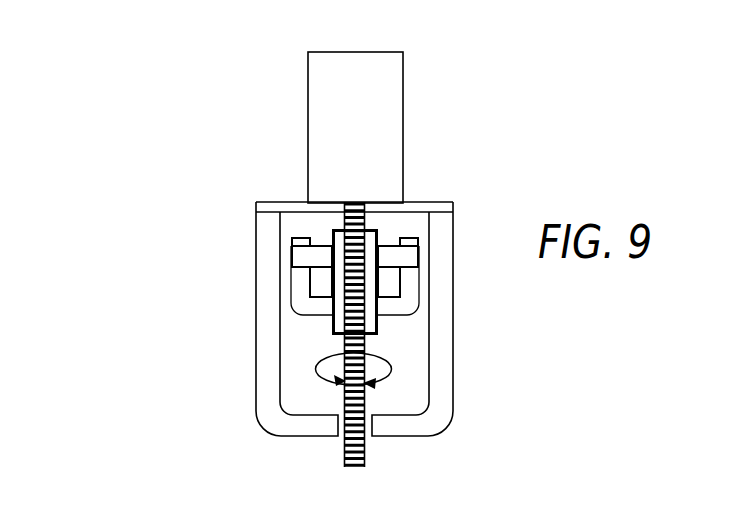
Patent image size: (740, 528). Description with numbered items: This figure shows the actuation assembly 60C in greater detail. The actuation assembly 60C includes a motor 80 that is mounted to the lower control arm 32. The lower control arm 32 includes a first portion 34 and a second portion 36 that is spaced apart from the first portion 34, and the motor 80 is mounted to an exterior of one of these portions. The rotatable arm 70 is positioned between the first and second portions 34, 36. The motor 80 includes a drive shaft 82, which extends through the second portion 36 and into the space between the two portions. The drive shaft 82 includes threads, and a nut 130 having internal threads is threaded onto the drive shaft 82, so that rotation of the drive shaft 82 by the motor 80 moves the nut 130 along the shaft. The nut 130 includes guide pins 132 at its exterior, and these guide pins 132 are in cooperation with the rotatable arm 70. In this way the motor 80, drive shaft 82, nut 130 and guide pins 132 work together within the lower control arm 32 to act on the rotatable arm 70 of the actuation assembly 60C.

The actuation assembly 60C is at (153, 119).
The lower control arm 32 is at (257, 355).
The first portion 34 is at (257, 250).
The second portion 36 is at (453, 300).
The rotatable arm 70 is at (291, 310).
The motor 80 is at (308, 90).
The drive shaft 82 is at (367, 398).
The nut 130 is at (340, 228).
The guide pins 132 is at (316, 240).